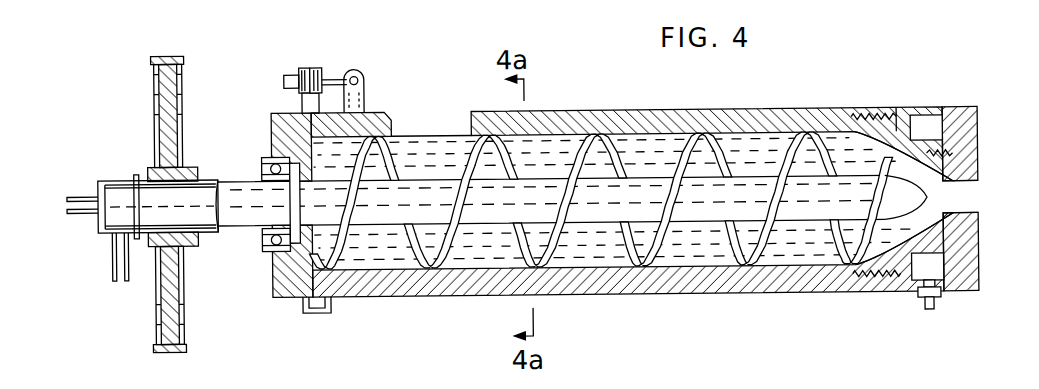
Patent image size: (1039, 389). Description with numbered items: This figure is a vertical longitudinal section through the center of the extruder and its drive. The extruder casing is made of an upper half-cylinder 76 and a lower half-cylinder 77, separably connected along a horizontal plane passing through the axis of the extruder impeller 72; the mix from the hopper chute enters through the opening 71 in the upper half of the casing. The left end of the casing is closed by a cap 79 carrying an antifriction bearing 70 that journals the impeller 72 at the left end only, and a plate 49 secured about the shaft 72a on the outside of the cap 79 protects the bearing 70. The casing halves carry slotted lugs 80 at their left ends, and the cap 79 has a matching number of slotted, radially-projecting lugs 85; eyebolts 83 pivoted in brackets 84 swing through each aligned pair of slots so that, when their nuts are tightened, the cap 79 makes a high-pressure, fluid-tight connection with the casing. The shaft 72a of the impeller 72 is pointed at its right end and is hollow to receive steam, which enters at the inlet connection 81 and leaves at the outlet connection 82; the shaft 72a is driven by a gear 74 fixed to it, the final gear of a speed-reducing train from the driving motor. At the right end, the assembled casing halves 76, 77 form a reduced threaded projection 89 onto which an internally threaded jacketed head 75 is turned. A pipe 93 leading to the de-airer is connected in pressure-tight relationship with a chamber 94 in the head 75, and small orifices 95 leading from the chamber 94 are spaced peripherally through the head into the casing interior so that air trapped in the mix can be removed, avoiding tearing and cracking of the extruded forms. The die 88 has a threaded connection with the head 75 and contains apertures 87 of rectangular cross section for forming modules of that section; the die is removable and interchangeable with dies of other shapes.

The gear 74 is at (186, 60).
The cap 79 is at (278, 109).
The antifriction bearing 70 is at (278, 250).
The plate 49 is at (262, 158).
The outlet connection 82 is at (80, 192).
The inlet connection 81 is at (112, 262).
The shaft 72a is at (227, 224).
The slotted radially-projecting lugs 85 is at (305, 65).
The slotted lugs 80 is at (318, 65).
The eyebolts 83 is at (353, 67).
The brackets 84 is at (366, 88).
The opening 71 is at (430, 118).
The extruder impeller 72 is at (572, 150).
The upper half-cylinder 76 is at (610, 110).
The lower half-cylinder 77 is at (808, 292).
The reduced threaded projection 89 is at (877, 122).
The jacketed head 75 is at (922, 110).
The chamber 94 is at (937, 121).
The die 88 is at (979, 139).
The apertures 87 is at (985, 186).
The small orifices 95 is at (912, 140).
The pipe 93 is at (941, 310).